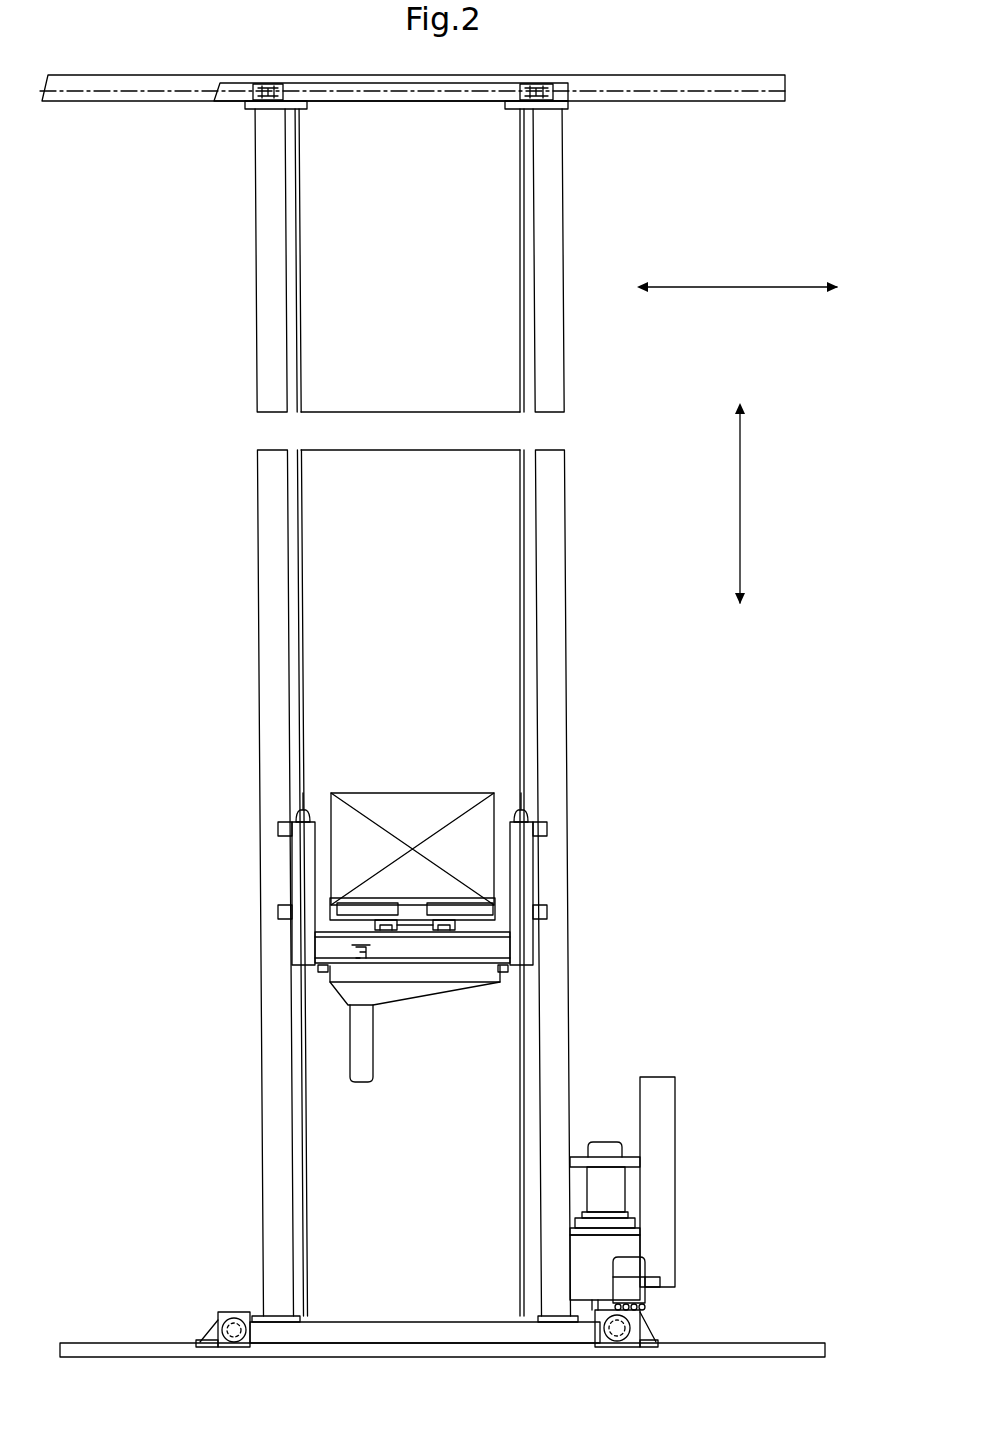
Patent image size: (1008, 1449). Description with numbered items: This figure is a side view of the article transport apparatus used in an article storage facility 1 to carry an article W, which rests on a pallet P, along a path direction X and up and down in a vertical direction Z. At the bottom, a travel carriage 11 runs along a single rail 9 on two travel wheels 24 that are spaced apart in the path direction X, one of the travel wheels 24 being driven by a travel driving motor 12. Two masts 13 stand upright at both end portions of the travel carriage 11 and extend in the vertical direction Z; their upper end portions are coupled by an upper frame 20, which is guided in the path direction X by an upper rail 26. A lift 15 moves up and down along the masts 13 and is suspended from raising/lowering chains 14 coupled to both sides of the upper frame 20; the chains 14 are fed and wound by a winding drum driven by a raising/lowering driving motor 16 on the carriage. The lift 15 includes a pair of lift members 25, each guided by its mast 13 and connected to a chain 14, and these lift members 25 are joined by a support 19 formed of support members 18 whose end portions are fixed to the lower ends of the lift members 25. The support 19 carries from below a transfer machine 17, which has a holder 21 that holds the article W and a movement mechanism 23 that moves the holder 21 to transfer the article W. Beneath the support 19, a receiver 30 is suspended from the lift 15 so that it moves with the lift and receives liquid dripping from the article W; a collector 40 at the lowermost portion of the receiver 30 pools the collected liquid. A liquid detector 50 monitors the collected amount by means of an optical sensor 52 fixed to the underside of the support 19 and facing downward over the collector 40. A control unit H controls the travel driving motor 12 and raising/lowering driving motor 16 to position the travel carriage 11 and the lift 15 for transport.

The article storage facility 1 is at (713, 215).
The rail 9 is at (113, 1340).
The travel carriage 11 is at (416, 1320).
The travel driving motor 12 is at (645, 1268).
The mast 13 is at (272, 272).
The raising/lowering chain 14 is at (301, 511).
The lift 15 is at (437, 726).
The raising/lowering driving motor 16 is at (604, 1140).
The transfer machine 17 is at (499, 921).
The support member 18 is at (311, 934).
The support 19 is at (341, 945).
The upper frame 20 is at (377, 106).
The holder 21 is at (349, 906).
The movement mechanism 23 is at (420, 934).
The travel wheel 24 is at (634, 1330).
The lift member 25 is at (319, 842).
The upper rail 26 is at (676, 72).
The receiver 30 is at (327, 1002).
The collector 40 is at (381, 1041).
The liquid detector 50 is at (272, 979).
The optical sensor 52 is at (353, 950).
The article W is at (388, 800).
The pallet P is at (498, 906).
The control unit H is at (667, 1112).
The path direction X is at (741, 279).
The vertical direction Z is at (753, 503).